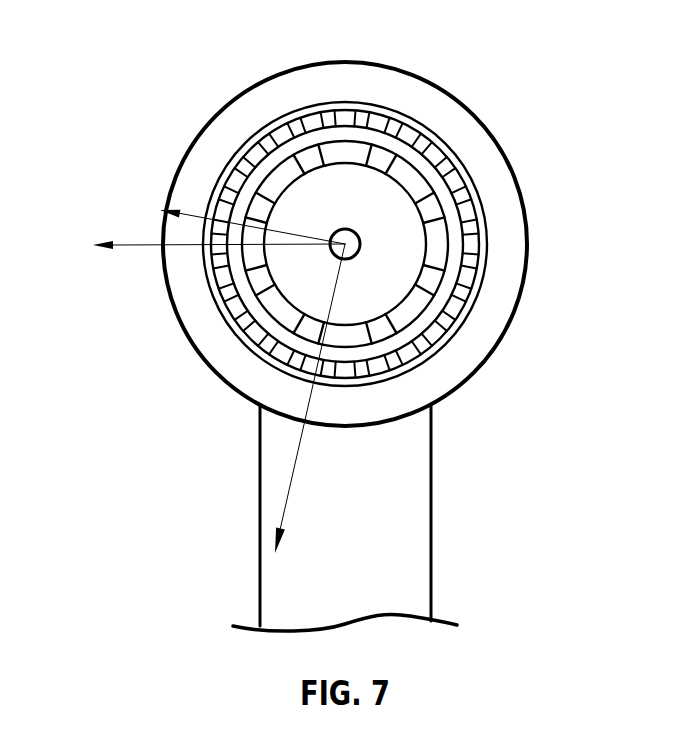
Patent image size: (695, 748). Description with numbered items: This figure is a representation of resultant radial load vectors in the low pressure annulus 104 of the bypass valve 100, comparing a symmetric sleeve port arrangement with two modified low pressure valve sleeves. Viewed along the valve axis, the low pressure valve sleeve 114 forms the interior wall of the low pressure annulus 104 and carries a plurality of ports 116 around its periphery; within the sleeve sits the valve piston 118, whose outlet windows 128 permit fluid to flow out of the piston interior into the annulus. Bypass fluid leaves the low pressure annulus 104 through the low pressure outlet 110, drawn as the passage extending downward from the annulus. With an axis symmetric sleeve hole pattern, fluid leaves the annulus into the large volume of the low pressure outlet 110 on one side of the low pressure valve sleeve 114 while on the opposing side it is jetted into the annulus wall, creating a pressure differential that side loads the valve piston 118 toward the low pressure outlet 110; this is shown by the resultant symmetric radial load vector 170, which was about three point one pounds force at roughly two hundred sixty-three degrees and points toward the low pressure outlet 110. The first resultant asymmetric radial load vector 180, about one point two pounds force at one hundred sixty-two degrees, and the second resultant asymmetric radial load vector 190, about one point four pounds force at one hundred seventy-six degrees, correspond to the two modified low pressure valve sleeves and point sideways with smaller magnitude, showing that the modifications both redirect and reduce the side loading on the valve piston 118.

The bypass valve 100 is at (140, 55).
The low pressure annulus 104 is at (212, 367).
The low pressure outlet 110 is at (431, 528).
The low pressure valve sleeve 114 is at (393, 289).
The ports 116 is at (252, 342).
The valve piston 118 is at (444, 189).
The outlet windows 128 is at (288, 167).
The resultant symmetric radial load vector 170 is at (282, 508).
The first resultant asymmetric radial load vector 180 is at (196, 218).
The second resultant asymmetric radial load vector 190 is at (187, 247).